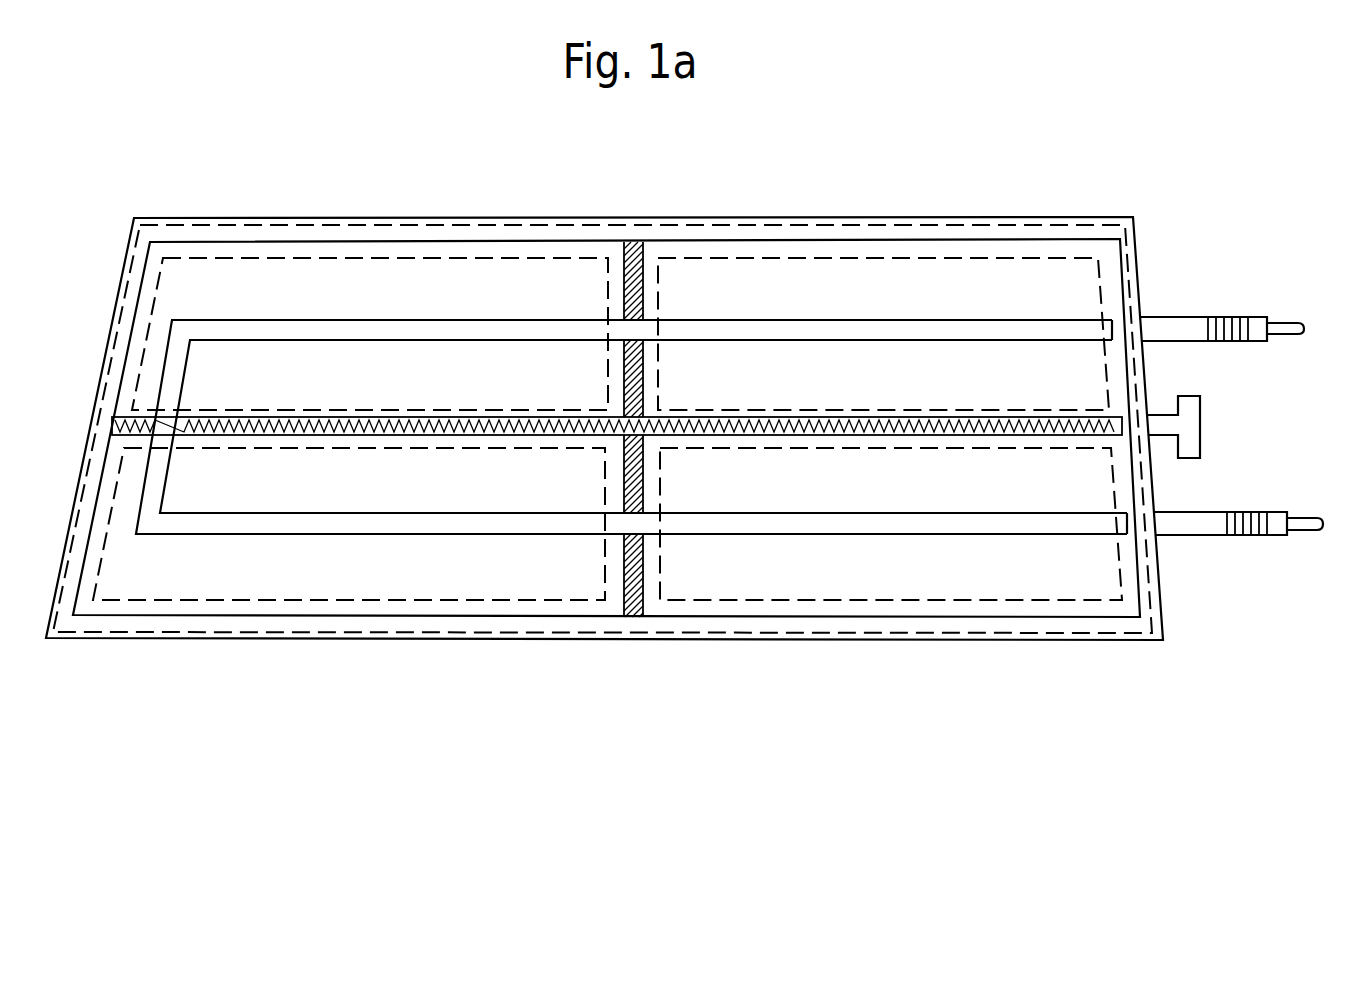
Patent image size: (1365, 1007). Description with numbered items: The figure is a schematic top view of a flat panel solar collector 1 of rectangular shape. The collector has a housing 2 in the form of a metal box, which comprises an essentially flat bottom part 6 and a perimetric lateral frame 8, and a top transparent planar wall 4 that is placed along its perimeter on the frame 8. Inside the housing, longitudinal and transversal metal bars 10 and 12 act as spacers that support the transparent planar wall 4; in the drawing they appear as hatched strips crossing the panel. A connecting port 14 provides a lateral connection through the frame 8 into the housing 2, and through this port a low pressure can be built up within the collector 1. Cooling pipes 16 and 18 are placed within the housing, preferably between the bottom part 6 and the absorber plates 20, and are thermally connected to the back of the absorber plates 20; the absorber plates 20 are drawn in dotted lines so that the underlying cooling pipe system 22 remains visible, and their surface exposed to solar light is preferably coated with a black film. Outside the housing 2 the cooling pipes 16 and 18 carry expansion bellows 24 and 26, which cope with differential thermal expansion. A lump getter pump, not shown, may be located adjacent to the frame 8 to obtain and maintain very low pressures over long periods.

The flat panel solar collector 1 is at (598, 210).
The housing 2 is at (200, 630).
The top transparent planar wall 4 is at (76, 633).
The bottom part 6 is at (607, 428).
The perimetric lateral frame 8 is at (1158, 612).
The longitudinal metal bar 10 is at (918, 431).
The transversal metal bar 12 is at (632, 618).
The connecting port 14 is at (1200, 425).
The cooling pipe 16 is at (1283, 326).
The cooling pipe 18 is at (1312, 531).
The absorber plates 20 is at (377, 273).
The fluid tube 22 is at (631, 427).
The expansion bellows 24 is at (1232, 318).
The expansion bellows 26 is at (1262, 537).